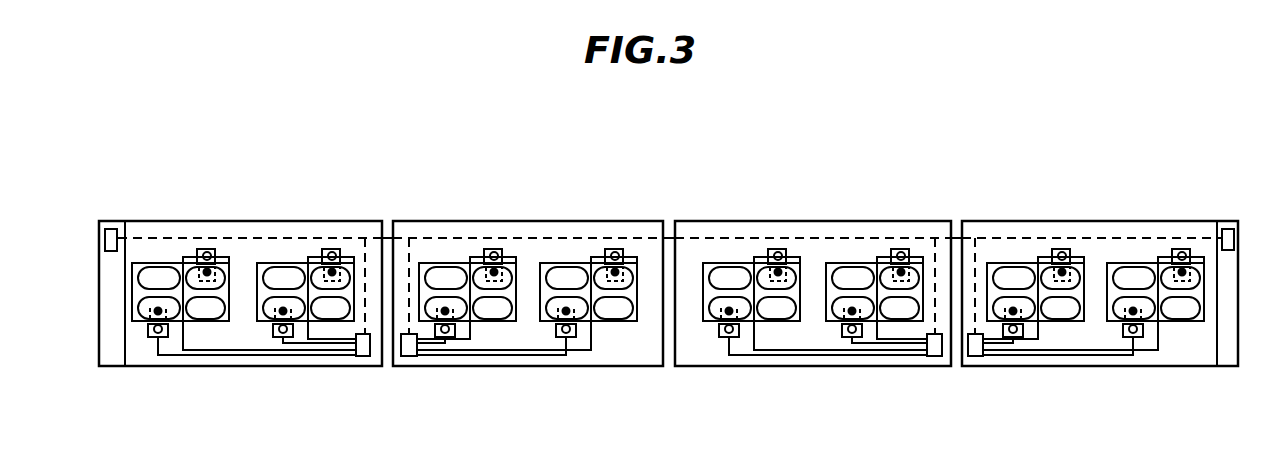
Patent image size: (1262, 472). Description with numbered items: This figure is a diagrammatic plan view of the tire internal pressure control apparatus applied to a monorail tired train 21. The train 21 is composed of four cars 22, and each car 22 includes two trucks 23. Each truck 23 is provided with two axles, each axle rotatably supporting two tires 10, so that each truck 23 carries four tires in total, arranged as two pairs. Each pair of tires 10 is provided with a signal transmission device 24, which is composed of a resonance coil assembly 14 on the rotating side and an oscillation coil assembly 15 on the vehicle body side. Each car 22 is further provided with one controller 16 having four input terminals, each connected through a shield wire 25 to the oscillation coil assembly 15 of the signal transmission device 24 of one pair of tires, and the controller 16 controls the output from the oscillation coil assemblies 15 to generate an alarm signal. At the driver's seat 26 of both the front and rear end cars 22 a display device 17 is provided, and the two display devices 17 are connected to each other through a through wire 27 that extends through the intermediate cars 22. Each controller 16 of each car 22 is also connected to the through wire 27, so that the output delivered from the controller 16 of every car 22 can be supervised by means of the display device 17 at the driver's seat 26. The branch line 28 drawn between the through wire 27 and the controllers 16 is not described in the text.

The tire 10 is at (618, 318).
The resonance coil assembly 14 is at (207, 271).
The oscillation coil assembly 15 is at (205, 252).
The controller 16 is at (363, 356).
The display device 17 is at (110, 229).
The train 21 is at (333, 211).
The car 22 is at (263, 221).
The truck 23 is at (153, 263).
The signal transmission device 24 is at (323, 282).
The shield wire 25 is at (327, 353).
The driver's seat 26 is at (111, 352).
The through wire 27 is at (348, 238).
The branch line 28 is at (407, 267).